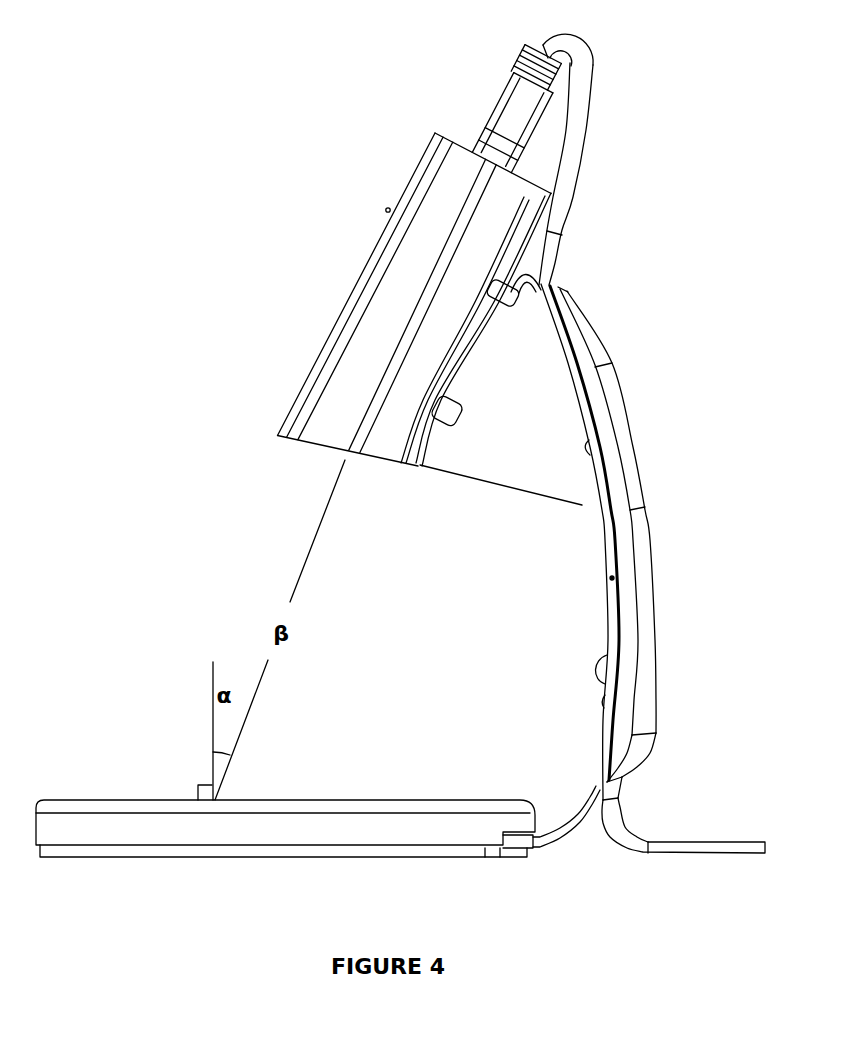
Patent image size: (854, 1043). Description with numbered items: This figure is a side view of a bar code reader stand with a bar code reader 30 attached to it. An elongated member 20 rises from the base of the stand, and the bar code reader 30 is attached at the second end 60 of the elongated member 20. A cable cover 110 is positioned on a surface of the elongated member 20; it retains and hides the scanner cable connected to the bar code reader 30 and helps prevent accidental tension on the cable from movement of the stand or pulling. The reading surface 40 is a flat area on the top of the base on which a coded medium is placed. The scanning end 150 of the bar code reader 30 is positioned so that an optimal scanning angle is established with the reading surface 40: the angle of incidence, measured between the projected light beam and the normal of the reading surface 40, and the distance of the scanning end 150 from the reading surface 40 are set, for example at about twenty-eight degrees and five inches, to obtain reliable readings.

The elongated member 20 is at (610, 579).
The bar code reader 30 is at (392, 305).
The reading surface 40 is at (135, 803).
The second end 60 is at (477, 370).
The cable cover 110 is at (624, 397).
The scanning end 150 is at (357, 457).